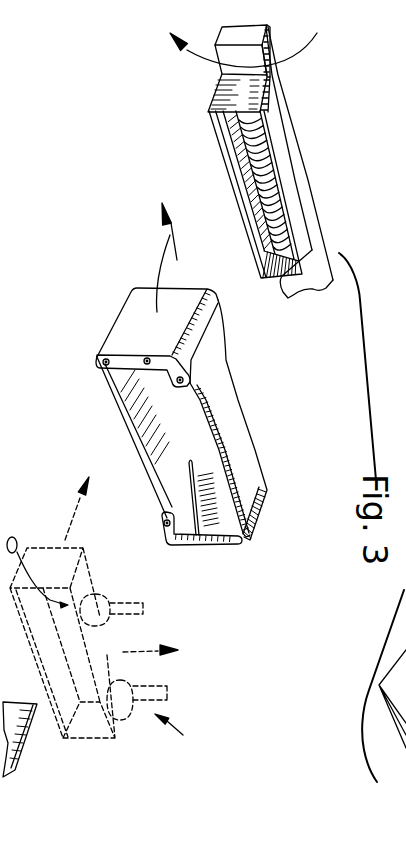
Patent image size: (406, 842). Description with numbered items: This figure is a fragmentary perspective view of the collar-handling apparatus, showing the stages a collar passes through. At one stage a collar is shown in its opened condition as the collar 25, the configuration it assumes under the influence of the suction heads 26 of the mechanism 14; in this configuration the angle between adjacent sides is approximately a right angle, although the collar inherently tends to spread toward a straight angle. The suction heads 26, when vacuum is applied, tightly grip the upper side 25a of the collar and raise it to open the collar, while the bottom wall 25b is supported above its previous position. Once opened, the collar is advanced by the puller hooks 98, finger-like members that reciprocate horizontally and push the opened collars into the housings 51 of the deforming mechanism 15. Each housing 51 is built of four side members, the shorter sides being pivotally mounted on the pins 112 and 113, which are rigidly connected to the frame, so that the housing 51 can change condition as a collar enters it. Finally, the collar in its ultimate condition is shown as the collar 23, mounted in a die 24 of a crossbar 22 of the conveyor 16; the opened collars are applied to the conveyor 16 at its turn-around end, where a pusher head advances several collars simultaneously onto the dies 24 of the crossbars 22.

The mechanism 14 is at (177, 734).
The deforming mechanism 15 is at (276, 530).
The conveyor 16 is at (236, 56).
The crossbar 22 is at (293, 120).
The collar 23 is at (312, 262).
The die 24 is at (273, 197).
The collar 25 is at (57, 562).
The upper side 25a is at (160, 653).
The bottom wall 25b is at (38, 652).
The suction heads 26 is at (102, 596).
The housing 51 is at (142, 332).
The puller hooks 98 is at (27, 743).
The pin 112 is at (141, 354).
The pin 113 is at (210, 539).